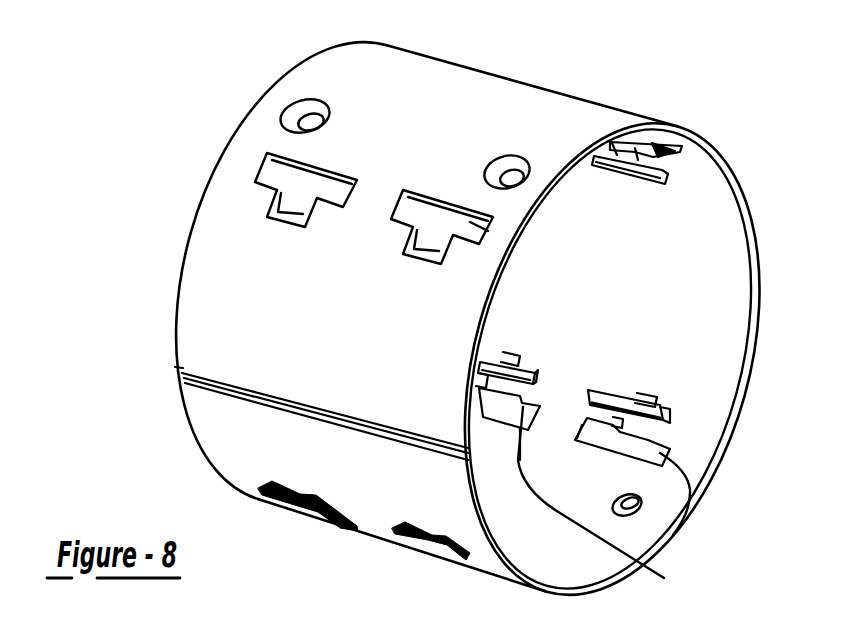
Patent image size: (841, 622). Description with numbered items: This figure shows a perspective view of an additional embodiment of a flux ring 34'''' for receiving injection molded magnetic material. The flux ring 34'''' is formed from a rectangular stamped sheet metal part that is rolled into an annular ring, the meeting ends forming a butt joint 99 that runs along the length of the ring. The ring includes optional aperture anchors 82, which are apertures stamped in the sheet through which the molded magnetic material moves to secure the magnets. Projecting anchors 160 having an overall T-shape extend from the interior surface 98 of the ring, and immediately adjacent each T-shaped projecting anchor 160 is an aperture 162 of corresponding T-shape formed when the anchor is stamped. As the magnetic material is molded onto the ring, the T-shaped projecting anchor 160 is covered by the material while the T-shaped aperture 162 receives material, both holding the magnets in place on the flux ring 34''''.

The flux ring 34'''' is at (466, 327).
The aperture anchors 82 is at (325, 100).
The interior surface 98 is at (701, 278).
The butt joint 99 is at (181, 372).
The T-shaped projecting anchor 160 is at (620, 390).
The T-shaped aperture 162 is at (608, 505).